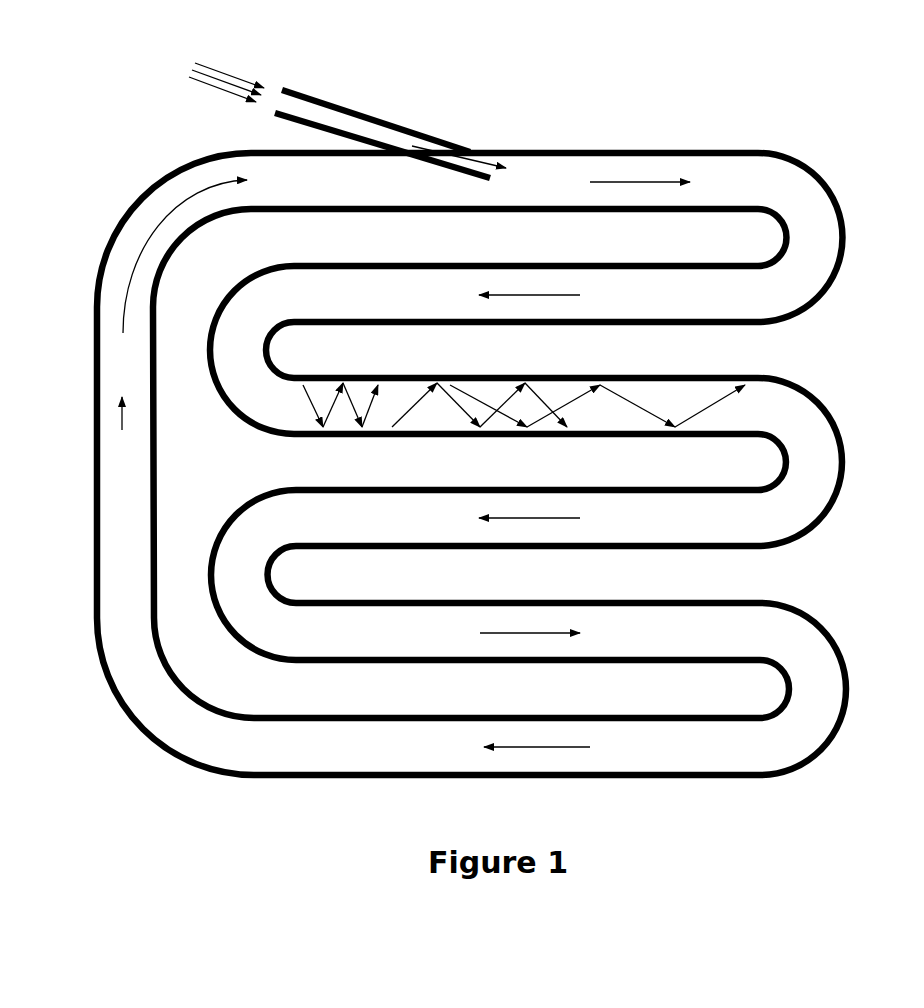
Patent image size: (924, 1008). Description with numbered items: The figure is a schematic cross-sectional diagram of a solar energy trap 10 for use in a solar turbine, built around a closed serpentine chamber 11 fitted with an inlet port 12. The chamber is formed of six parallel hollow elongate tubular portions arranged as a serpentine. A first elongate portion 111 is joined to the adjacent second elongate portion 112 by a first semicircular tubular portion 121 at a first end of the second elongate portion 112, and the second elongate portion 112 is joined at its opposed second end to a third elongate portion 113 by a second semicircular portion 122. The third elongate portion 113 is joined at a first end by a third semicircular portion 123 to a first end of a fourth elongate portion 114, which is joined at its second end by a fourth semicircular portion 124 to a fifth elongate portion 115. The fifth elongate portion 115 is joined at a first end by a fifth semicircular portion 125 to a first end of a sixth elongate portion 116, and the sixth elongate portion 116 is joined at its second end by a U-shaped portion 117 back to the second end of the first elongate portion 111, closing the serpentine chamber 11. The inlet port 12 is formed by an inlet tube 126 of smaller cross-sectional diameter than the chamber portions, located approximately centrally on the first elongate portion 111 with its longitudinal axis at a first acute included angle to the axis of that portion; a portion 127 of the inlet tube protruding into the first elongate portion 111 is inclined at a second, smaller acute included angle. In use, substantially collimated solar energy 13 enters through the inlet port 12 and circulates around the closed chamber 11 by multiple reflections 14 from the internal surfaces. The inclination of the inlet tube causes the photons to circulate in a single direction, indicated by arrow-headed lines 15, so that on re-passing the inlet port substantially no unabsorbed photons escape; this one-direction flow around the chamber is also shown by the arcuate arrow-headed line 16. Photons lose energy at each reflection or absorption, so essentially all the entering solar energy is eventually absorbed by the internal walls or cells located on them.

The solar energy trap 10 is at (851, 191).
The closed serpentine chamber 11 is at (848, 462).
The inlet port 12 is at (274, 87).
The collimated solar energy 13 is at (189, 68).
The multiple reflections 14 is at (350, 377).
The arrow-headed lines 15 is at (650, 178).
The arcuate arrow-headed line 16 is at (147, 240).
The first elongate portion 111 is at (532, 192).
The second elongate portion 112 is at (610, 304).
The third elongate portion 113 is at (588, 423).
The fourth elongate portion 114 is at (616, 529).
The fifth elongate portion 115 is at (629, 644).
The sixth elongate portion 116 is at (634, 759).
The U-shaped portion 117 is at (107, 564).
The first semicircular tubular portion 121 is at (793, 253).
The second semicircular portion 122 is at (223, 354).
The third semicircular portion 123 is at (794, 476).
The fourth semicircular portion 124 is at (228, 577).
The fifth semicircular portion 125 is at (798, 706).
The inlet tube 126 is at (428, 132).
The protruding portion of the inlet tube 127 is at (475, 182).